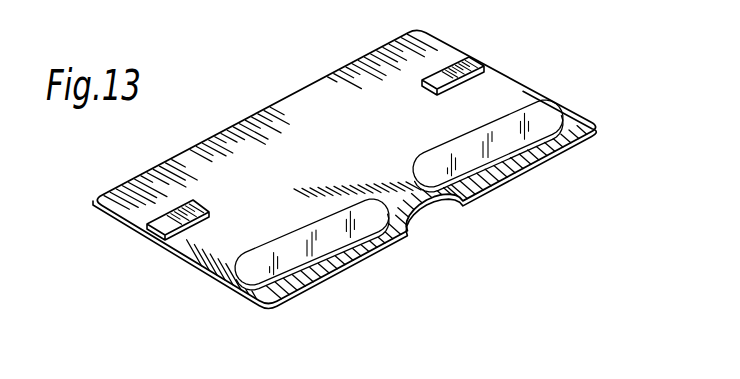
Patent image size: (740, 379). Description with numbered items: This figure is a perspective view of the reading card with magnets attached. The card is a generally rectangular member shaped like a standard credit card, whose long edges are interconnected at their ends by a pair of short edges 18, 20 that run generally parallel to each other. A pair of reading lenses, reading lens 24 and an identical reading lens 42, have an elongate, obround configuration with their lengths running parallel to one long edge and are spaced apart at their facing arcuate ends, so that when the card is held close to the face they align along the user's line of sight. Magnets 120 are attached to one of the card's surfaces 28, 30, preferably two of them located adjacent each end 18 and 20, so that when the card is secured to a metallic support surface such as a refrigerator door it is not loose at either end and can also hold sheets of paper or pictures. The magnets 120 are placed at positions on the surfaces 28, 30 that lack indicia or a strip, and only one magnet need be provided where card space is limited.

The short edge 18 is at (205, 272).
The short edge 20 is at (561, 103).
The reading lens 24 is at (327, 240).
The surface 28 is at (270, 112).
The surface 30 is at (292, 118).
The reading lens 42 is at (469, 165).
The magnet 120 is at (478, 61).